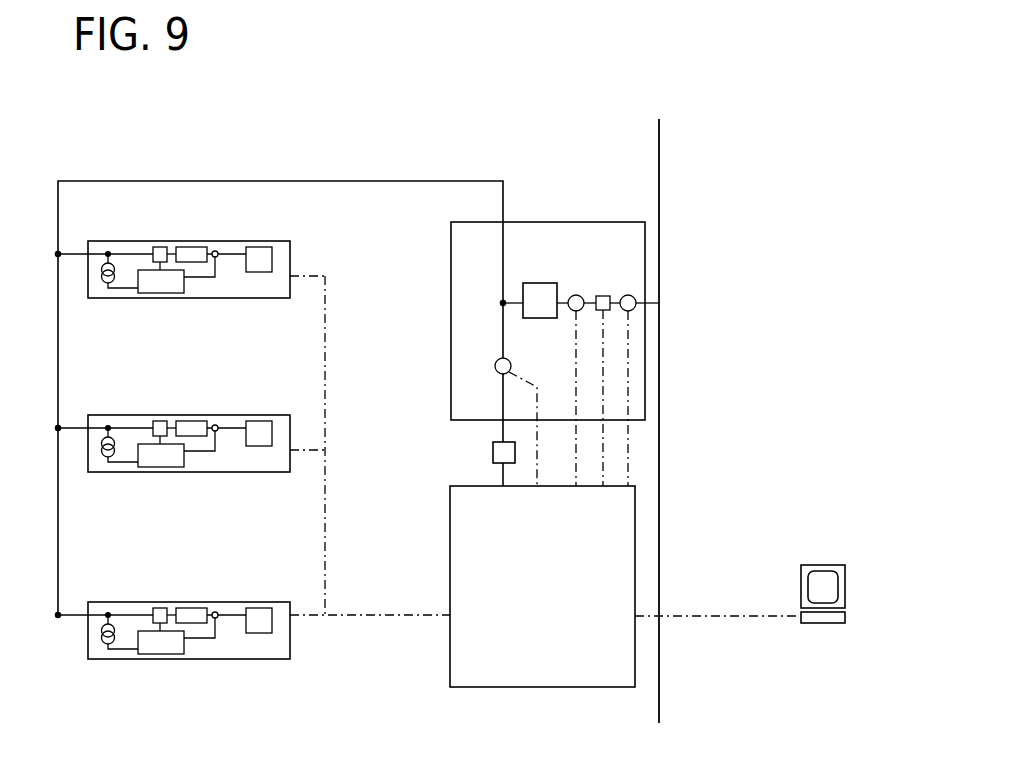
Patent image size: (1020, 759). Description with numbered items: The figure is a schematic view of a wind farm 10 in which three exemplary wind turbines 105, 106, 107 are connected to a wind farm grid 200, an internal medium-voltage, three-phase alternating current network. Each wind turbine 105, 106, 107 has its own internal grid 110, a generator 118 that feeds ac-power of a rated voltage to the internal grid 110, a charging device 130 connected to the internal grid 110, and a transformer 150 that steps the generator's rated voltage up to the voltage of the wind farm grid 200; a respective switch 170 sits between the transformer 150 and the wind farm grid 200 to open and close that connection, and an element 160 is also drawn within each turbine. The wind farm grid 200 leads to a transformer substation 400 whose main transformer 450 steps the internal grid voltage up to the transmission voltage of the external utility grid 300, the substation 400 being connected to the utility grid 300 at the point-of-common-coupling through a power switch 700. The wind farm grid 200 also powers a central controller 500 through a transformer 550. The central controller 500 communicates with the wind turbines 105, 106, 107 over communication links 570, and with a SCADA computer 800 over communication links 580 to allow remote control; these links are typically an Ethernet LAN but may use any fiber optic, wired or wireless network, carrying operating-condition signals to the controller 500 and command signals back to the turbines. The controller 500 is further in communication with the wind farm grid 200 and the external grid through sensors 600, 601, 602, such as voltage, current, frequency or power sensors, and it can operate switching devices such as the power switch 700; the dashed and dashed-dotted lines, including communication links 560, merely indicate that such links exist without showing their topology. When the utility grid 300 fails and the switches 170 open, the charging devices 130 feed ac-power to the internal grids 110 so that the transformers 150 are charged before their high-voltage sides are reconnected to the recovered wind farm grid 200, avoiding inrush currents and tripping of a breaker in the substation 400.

The wind farm 10 is at (489, 86).
The wind turbine 105 is at (304, 257).
The wind turbine 106 is at (305, 430).
The wind turbine 107 is at (262, 674).
The internal grid 110 is at (235, 253).
The generator 118 is at (260, 259).
The charging device 130 is at (160, 287).
The transformer 150 is at (183, 252).
The current source 160 is at (105, 283).
The switch 170 is at (158, 247).
The wind farm grid 200 is at (313, 180).
The utility grid 300 is at (659, 170).
The transformer substation 400 is at (603, 261).
The main transformer 450 is at (539, 283).
The central controller 500 is at (566, 668).
The transformer 550 is at (508, 463).
The communication links 560 is at (630, 460).
The communication links 570 is at (355, 616).
The communication links 580 is at (755, 620).
The sensor 600 is at (511, 367).
The sensor 601 is at (581, 296).
The sensor 602 is at (635, 297).
The power switch 700 is at (608, 297).
The SCADA computer 800 is at (820, 565).